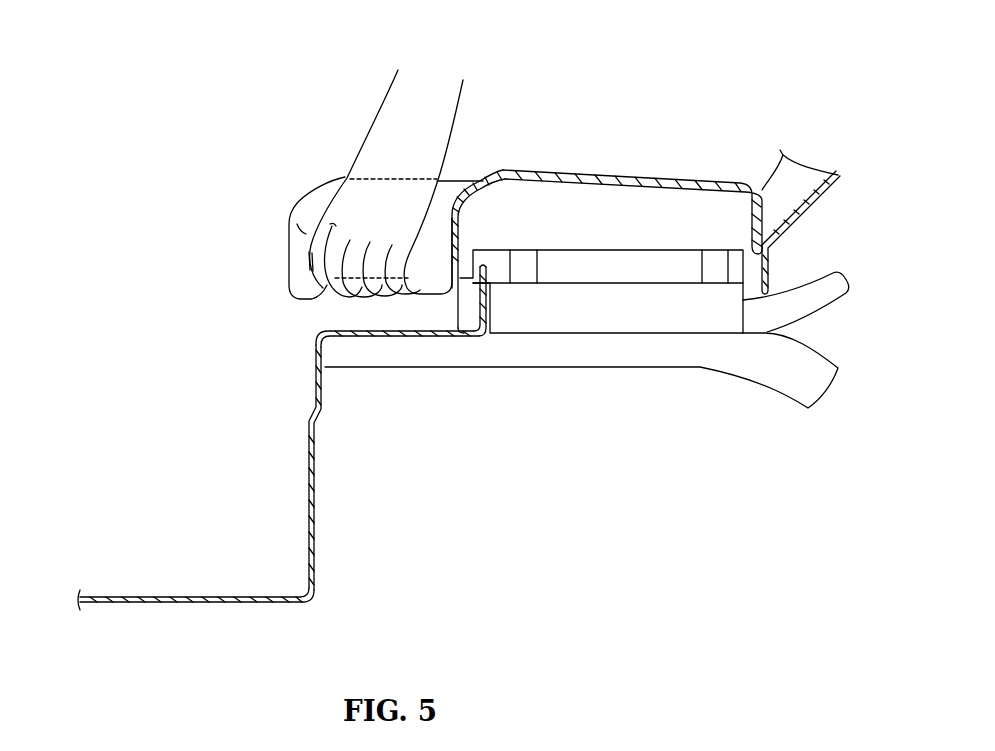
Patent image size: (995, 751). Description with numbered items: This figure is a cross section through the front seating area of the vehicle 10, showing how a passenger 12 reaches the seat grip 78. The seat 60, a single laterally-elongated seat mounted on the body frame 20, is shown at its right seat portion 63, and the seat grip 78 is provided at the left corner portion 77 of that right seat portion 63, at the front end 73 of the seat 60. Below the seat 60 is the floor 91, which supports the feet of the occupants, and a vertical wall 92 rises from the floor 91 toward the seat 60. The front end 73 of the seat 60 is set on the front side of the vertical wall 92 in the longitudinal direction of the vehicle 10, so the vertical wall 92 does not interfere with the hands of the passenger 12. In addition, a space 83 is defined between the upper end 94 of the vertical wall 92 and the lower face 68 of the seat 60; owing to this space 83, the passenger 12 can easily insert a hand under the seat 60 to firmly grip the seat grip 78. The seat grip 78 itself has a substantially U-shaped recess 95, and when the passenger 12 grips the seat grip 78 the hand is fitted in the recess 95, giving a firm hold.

The vehicle 10 is at (205, 67).
The passenger 12 is at (383, 112).
The body frame 20 is at (612, 368).
The seat 60 is at (670, 167).
The right seat portion 63 is at (458, 180).
The lower face 68 is at (427, 296).
The front end 73 is at (287, 250).
The left corner portion 77 is at (315, 197).
The seat grip 78 is at (352, 283).
The space 83 is at (447, 312).
The floor 91 is at (167, 594).
The vertical wall 92 is at (307, 472).
The upper end 94 is at (318, 328).
The recess 95 is at (377, 297).